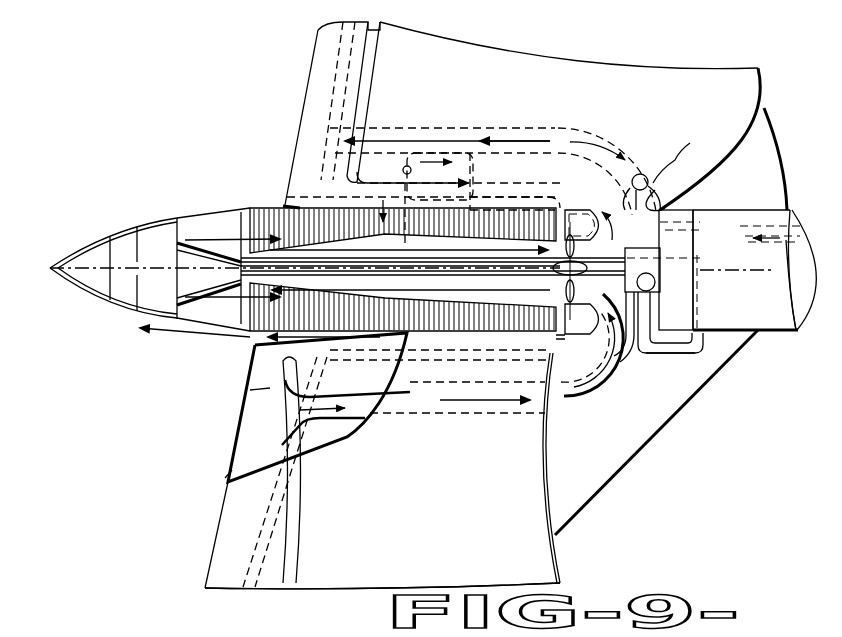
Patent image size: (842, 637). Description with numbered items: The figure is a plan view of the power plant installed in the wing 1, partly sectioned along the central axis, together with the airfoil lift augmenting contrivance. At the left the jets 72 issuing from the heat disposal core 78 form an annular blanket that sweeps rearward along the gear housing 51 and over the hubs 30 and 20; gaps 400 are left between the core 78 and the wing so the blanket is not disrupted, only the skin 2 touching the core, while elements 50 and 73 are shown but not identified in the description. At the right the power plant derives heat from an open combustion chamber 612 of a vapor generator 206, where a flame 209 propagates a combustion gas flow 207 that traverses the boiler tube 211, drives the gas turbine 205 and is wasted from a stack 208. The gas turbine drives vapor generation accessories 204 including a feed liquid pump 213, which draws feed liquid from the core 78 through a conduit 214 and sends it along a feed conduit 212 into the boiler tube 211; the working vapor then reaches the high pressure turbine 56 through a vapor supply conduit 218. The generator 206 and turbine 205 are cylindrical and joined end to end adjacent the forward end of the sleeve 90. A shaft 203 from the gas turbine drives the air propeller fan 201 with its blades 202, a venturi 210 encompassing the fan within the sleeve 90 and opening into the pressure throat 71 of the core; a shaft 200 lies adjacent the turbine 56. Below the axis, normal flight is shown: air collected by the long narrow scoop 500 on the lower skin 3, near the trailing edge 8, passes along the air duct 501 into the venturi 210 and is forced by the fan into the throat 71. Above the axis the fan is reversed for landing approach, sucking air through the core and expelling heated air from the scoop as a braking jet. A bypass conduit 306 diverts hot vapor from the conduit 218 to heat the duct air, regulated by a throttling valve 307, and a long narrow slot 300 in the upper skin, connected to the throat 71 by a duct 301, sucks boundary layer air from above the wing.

The wing 1 is at (382, 522).
The skin 2 is at (358, 432).
The lower skin 3 is at (250, 390).
The trailing edge 8 is at (225, 477).
The hub 20 is at (89, 280).
The hub 30 is at (127, 236).
The air passage 50 is at (232, 267).
The gear housing 51 is at (149, 293).
The high pressure turbine 56 is at (182, 258).
The pressure throat 71 is at (400, 279).
The jets 72 is at (188, 340).
The cowl 73 is at (212, 212).
The heat disposal core 78 is at (246, 209).
The sleeve 90 is at (592, 210).
The shaft 200 is at (382, 264).
The air propeller fan 201 is at (490, 262).
The blades 202 is at (555, 272).
The shaft 203 is at (586, 271).
The vapor generation accessories 204 is at (690, 230).
The gas turbine 205 is at (670, 322).
The vapor generator 206 is at (679, 396).
The combustion gas flow 207 is at (727, 232).
The stack 208 is at (700, 168).
The flame 209 is at (793, 207).
The venturi 210 is at (589, 345).
The boiler tube 211 is at (703, 312).
The feed conduit 212 is at (675, 354).
The feed liquid pump 213 is at (662, 270).
The conduit 214 is at (627, 362).
The vapor supply conduit 218 is at (300, 264).
The slot 300 is at (366, 102).
The duct 301 is at (530, 190).
The bypass conduit 306 is at (438, 150).
The throttling valve 307 is at (403, 170).
The gaps 400 is at (285, 205).
The air scoop 500 is at (328, 118).
The air duct 501 is at (620, 162).
The open combustion chamber 612 is at (802, 285).